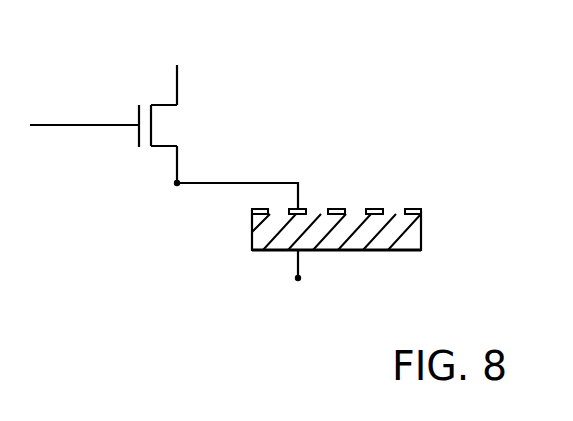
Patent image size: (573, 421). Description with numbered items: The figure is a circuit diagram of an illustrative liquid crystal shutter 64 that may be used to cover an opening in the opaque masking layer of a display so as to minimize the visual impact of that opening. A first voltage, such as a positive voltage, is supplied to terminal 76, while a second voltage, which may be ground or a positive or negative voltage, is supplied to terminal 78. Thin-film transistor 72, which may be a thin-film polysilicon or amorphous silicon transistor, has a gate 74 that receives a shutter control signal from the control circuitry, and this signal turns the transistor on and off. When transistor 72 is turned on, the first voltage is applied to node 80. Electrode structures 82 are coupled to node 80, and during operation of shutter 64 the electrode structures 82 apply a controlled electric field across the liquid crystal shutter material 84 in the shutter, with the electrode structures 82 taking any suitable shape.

The shutter 64 is at (344, 64).
The thin-film transistor 72 is at (116, 156).
The gate 74 is at (48, 124).
The terminal 76 is at (178, 84).
The terminal 78 is at (299, 278).
The node 80 is at (179, 182).
The electrode structures 82 is at (376, 208).
The liquid crystal shutter material 84 is at (412, 238).